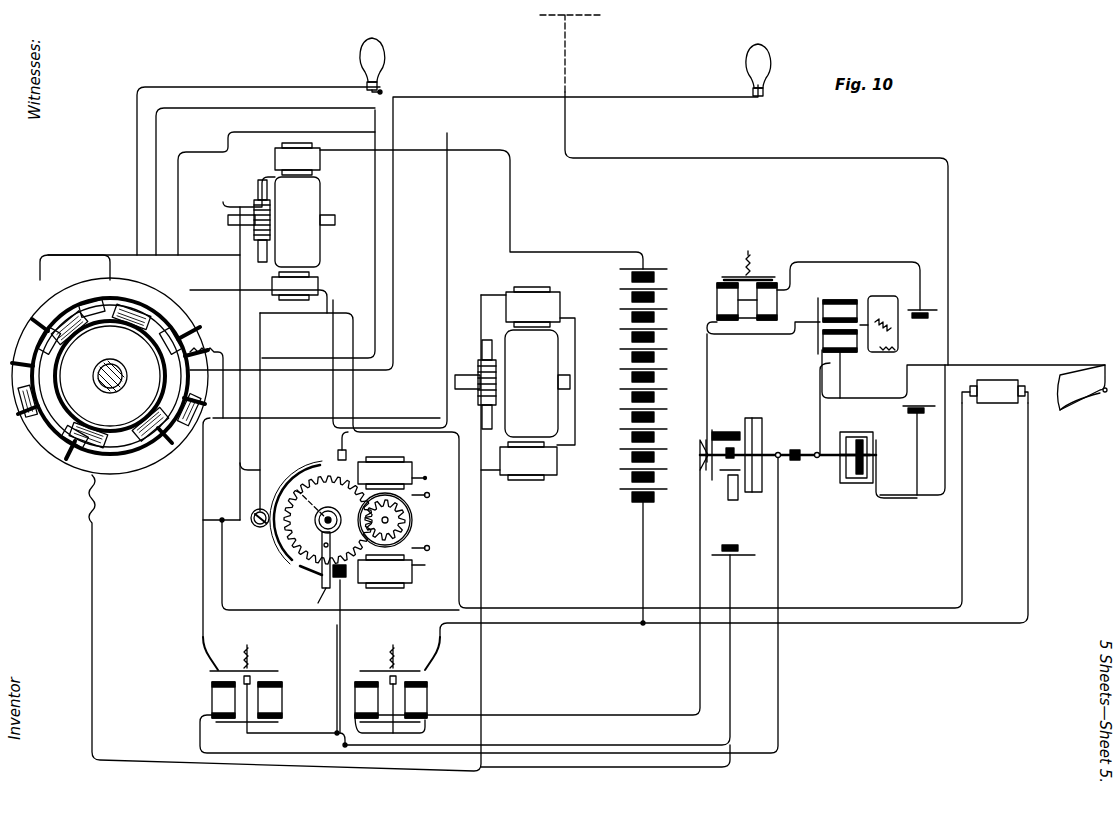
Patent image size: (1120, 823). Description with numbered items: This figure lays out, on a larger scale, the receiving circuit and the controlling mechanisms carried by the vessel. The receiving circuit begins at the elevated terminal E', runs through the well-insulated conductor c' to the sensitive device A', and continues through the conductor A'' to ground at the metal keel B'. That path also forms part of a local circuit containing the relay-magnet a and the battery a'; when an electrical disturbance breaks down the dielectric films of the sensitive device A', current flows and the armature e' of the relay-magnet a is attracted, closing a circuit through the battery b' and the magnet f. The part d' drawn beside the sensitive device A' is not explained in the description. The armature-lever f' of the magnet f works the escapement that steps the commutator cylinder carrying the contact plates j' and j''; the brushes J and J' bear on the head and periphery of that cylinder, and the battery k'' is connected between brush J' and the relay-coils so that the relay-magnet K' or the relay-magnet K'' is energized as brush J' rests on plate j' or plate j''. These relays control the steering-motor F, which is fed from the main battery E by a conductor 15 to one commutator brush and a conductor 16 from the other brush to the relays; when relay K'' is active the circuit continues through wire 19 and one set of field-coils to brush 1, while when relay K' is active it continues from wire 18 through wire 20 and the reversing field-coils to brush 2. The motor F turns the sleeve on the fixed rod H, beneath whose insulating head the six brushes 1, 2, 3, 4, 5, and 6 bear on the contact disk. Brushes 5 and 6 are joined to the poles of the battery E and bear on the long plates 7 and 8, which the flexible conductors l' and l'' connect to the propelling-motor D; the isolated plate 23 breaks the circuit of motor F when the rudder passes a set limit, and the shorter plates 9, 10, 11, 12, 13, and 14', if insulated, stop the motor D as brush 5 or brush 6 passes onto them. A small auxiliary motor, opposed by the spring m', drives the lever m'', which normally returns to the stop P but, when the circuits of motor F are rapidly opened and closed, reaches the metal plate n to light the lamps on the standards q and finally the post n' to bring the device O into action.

The vertical rod H is at (110, 394).
The steering-motor F is at (281, 221).
The propelling-motor D is at (512, 383).
The storage battery E is at (633, 385).
The terminal E' is at (570, 53).
The standard q is at (568, 70).
The conductor c' is at (718, 147).
The magnet f is at (747, 298).
The armature-lever f' is at (734, 265).
The relay-magnet a is at (837, 340).
The armature e' is at (879, 324).
The battery b' is at (922, 323).
The battery a' is at (919, 419).
The conductor A'' is at (984, 355).
The device O is at (995, 402).
The metal keel B' is at (1083, 389).
The brush J is at (776, 463).
The contact plate j' is at (726, 441).
The brush J' is at (724, 487).
The contact plate j'' is at (753, 463).
The battery k'' is at (737, 543).
The sensitive device A' is at (876, 470).
The armature d' is at (891, 477).
The metal plate n is at (284, 506).
The post n' is at (379, 510).
The spring m' is at (348, 520).
The lever m'' is at (317, 571).
The stop P is at (328, 567).
The relay-magnet K' is at (234, 679).
The relay-magnet K'' is at (403, 679).
The flexible conductor l' is at (258, 171).
The flexible conductor l'' is at (285, 533).
The conductor 15 is at (223, 175).
The conductor 16 is at (329, 679).
The wire 18 is at (340, 284).
The wire 19 is at (434, 415).
The wire 20 is at (219, 280).
The shorter contact plate 12 is at (195, 402).
The shorter contact plate 13 is at (190, 352).
The shorter contact plate 14' is at (204, 307).
The brush 1 is at (155, 325).
The brush 2 is at (173, 395).
The brush 3 is at (77, 321).
The brush 4 is at (130, 435).
The brush 5 is at (65, 297).
The brush 6 is at (155, 447).
The long contact plate 7 is at (140, 292).
The long contact plate 8 is at (77, 457).
The shorter contact plate 9 is at (23, 352).
The shorter contact plate 10 is at (9, 410).
The shorter contact plate 11 is at (21, 450).
The isolated plate 23 is at (64, 422).